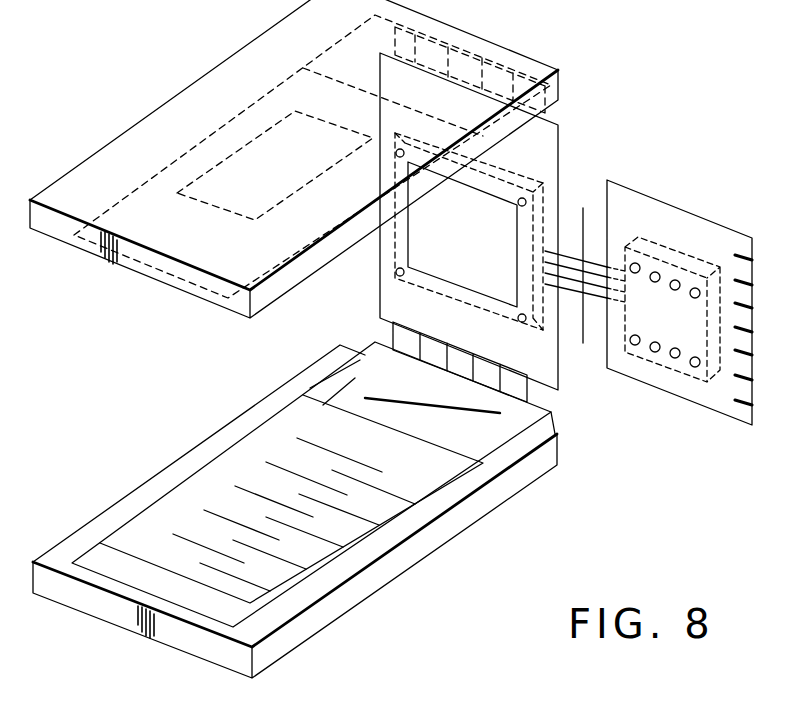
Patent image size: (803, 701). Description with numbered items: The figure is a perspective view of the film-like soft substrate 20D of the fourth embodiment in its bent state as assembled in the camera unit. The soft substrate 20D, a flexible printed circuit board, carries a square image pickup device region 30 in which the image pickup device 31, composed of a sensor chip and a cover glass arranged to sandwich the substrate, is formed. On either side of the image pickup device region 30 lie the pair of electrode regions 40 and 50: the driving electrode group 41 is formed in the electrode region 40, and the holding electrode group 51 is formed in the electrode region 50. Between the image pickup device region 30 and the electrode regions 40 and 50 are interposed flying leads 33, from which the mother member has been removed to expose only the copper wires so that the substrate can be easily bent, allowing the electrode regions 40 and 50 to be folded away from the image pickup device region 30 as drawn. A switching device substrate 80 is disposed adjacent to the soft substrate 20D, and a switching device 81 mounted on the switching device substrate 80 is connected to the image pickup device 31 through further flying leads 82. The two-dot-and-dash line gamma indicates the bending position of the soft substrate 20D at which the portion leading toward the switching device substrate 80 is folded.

The soft substrate 20D is at (370, 295).
The image pickup device region 30 is at (547, 145).
The image pickup device 31 is at (507, 257).
The flying leads 33 is at (527, 390).
The electrode region 40 is at (353, 577).
The driving electrode group 41 is at (428, 510).
The electrode region 50 is at (230, 78).
The holding electrode group 51 is at (203, 143).
The switching device substrate 80 is at (716, 234).
The switching device 81 is at (687, 377).
The flying leads 82 is at (598, 318).
The bending position gamma is at (593, 232).